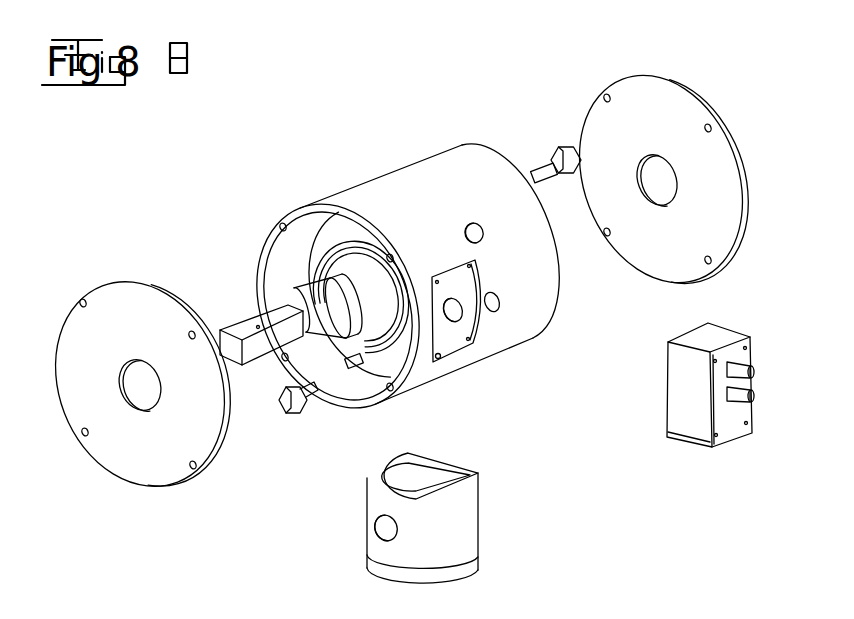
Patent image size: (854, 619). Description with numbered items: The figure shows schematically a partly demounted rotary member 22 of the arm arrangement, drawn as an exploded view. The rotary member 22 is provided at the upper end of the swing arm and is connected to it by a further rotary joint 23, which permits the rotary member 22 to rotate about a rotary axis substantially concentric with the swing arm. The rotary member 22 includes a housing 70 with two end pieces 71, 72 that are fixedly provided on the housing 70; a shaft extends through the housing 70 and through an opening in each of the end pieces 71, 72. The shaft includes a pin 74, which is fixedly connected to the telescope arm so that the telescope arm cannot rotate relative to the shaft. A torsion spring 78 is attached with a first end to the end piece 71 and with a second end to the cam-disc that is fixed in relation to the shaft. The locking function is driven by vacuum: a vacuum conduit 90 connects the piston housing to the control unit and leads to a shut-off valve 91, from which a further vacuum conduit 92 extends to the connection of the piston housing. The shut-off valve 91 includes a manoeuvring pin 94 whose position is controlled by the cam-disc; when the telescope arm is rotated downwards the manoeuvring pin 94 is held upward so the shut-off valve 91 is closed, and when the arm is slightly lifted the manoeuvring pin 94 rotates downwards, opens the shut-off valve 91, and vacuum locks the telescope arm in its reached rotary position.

The rotary member 22 is at (250, 173).
The further rotary joint 23 is at (456, 572).
The housing 70 is at (377, 187).
The end piece 71 is at (104, 307).
The end piece 72 is at (667, 97).
The pin 74 is at (233, 328).
The torsion spring 78 is at (352, 369).
The vacuum conduit 90 is at (749, 398).
The shut-off valve 91 is at (692, 425).
The vacuum conduit 92 is at (755, 364).
The manoeuvring pin 94 is at (665, 377).